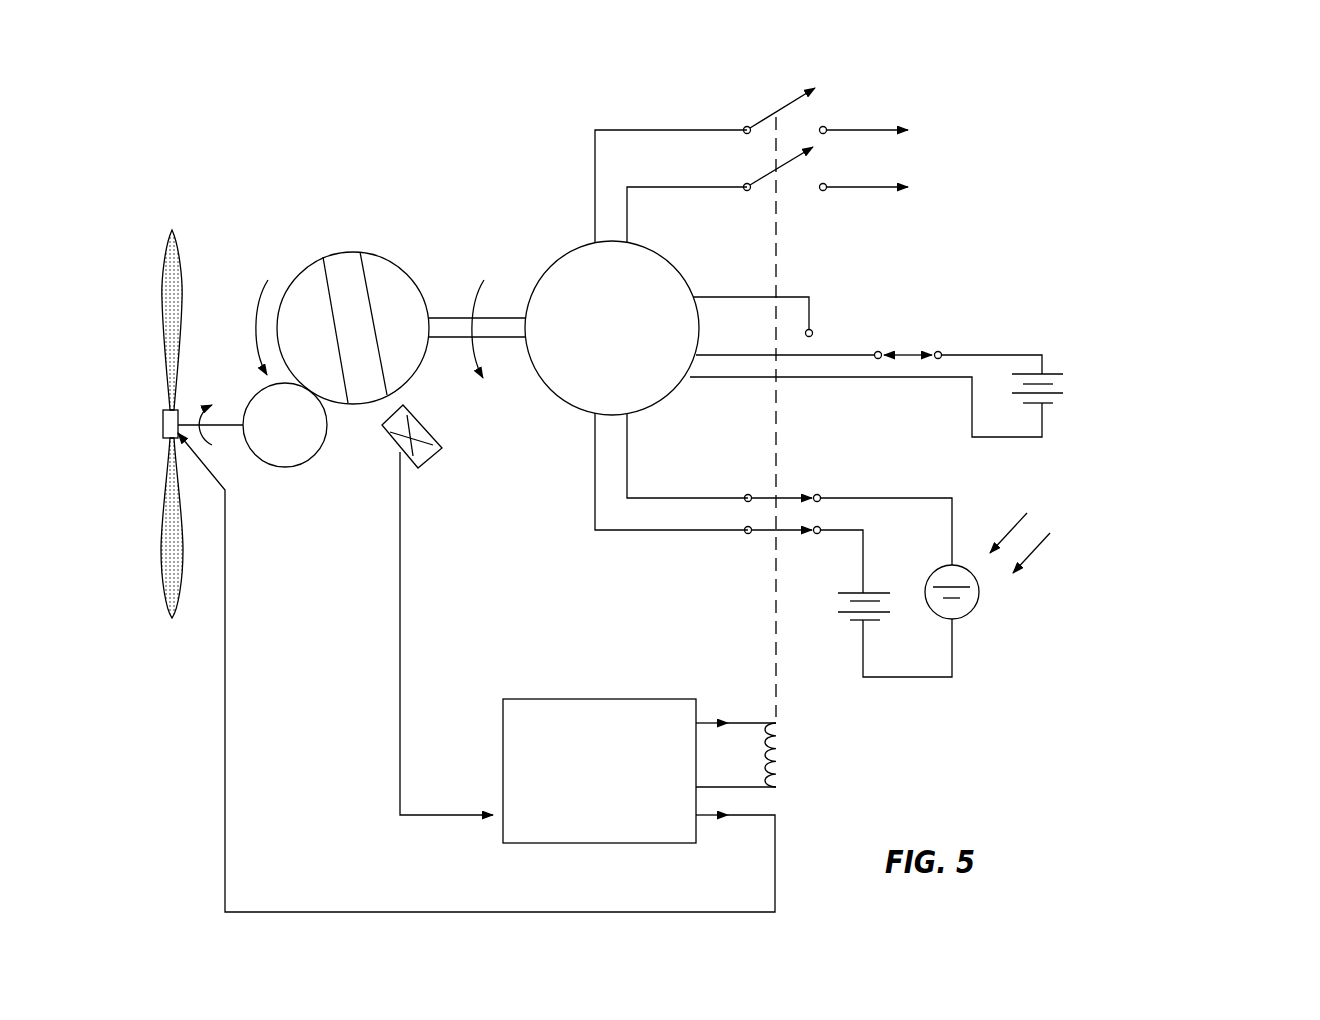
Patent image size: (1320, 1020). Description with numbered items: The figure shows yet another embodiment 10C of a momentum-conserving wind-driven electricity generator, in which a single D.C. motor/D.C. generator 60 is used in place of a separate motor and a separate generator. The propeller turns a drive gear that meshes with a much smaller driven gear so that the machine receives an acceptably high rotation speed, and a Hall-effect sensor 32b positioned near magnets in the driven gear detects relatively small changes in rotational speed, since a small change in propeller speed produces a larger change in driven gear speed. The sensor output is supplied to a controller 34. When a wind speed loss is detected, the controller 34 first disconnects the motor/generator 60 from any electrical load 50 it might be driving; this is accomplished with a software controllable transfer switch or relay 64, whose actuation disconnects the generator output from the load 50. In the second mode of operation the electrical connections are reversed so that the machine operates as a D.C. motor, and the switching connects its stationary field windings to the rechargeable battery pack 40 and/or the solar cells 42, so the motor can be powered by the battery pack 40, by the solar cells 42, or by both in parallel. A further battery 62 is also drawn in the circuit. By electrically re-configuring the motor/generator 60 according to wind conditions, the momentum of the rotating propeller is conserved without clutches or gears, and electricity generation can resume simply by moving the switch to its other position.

The momentum-conserving wind-driven electricity generator embodiment 10C is at (885, 53).
The transfer switch or relay 64 is at (767, 120).
The electrical load 50 is at (1186, 160).
The battery 62 is at (1050, 374).
The D.C. motor/D.C. generator 60 is at (657, 377).
The Hall-effect sensor 32b is at (428, 455).
The solar cells 42 is at (978, 602).
The rechargeable battery pack 40 is at (860, 623).
The controller 34 is at (597, 698).